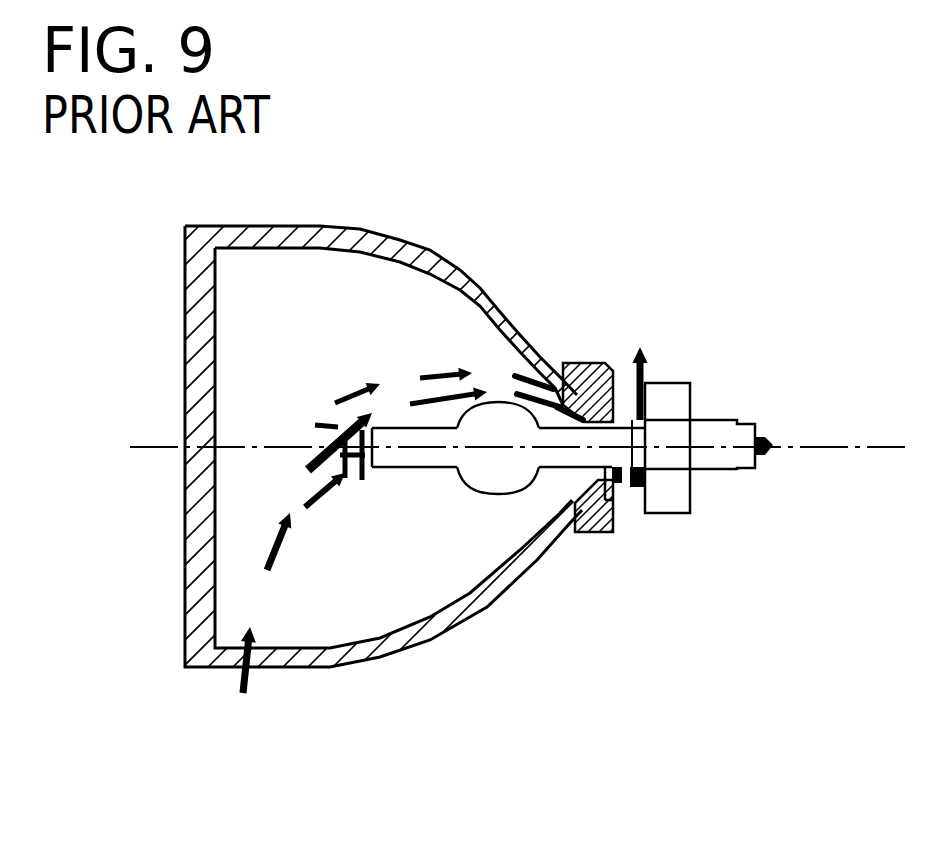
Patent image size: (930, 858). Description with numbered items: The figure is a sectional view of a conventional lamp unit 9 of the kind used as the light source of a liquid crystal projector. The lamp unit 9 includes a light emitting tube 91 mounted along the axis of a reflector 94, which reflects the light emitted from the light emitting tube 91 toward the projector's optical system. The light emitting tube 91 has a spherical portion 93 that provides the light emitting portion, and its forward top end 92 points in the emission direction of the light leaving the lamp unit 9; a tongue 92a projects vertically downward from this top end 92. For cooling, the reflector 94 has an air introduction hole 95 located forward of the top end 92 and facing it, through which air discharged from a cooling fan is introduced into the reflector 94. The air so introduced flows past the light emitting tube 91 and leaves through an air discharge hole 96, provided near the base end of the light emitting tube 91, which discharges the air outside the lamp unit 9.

The lamp unit 9 is at (578, 182).
The light emitting tube 91 is at (393, 470).
The top end 92 is at (338, 432).
The tongue 92a is at (343, 487).
The spherical portion 93 is at (473, 488).
The reflector 94 is at (432, 252).
The air introduction hole 95 is at (280, 658).
The air discharge hole 96 is at (650, 400).